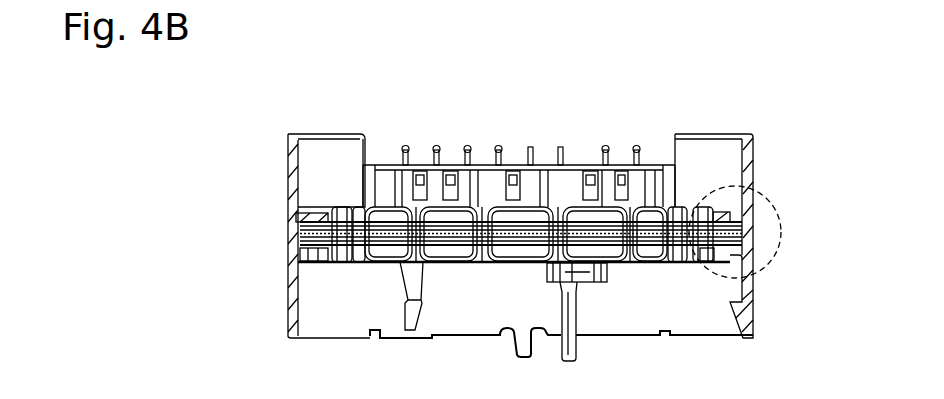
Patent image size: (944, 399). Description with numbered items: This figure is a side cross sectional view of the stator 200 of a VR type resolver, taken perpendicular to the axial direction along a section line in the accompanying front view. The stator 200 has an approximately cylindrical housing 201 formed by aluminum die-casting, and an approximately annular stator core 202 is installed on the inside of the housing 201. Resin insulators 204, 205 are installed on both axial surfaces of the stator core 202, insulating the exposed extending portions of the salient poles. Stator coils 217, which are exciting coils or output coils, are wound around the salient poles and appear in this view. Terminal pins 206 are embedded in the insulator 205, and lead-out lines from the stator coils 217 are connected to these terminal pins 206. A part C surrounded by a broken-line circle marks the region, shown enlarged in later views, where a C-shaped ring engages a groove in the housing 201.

The stator 200 is at (520, 247).
The housing 201 is at (752, 158).
The stator core 202 is at (300, 234).
The insulator 204 is at (312, 249).
The insulator 205 is at (316, 207).
The terminal pins 206 is at (405, 146).
The stator coils 217 is at (334, 262).
The part C is at (778, 224).